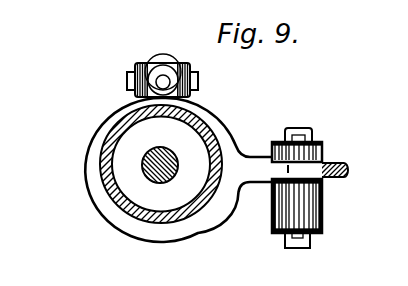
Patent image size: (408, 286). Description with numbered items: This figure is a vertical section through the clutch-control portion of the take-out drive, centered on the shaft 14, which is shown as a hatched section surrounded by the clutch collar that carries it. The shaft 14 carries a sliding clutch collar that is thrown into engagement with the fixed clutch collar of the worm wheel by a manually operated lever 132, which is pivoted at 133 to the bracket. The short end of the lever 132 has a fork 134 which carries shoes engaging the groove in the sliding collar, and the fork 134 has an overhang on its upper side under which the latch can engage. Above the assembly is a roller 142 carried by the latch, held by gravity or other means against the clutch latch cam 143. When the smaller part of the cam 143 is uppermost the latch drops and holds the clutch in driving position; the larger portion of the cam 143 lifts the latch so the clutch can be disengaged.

The shaft 14 is at (142, 164).
The manually operated lever 132 is at (332, 178).
The pivot 133 is at (299, 247).
The fork 134 is at (222, 110).
The roller 142 is at (170, 80).
The clutch latch cam 143 is at (90, 144).